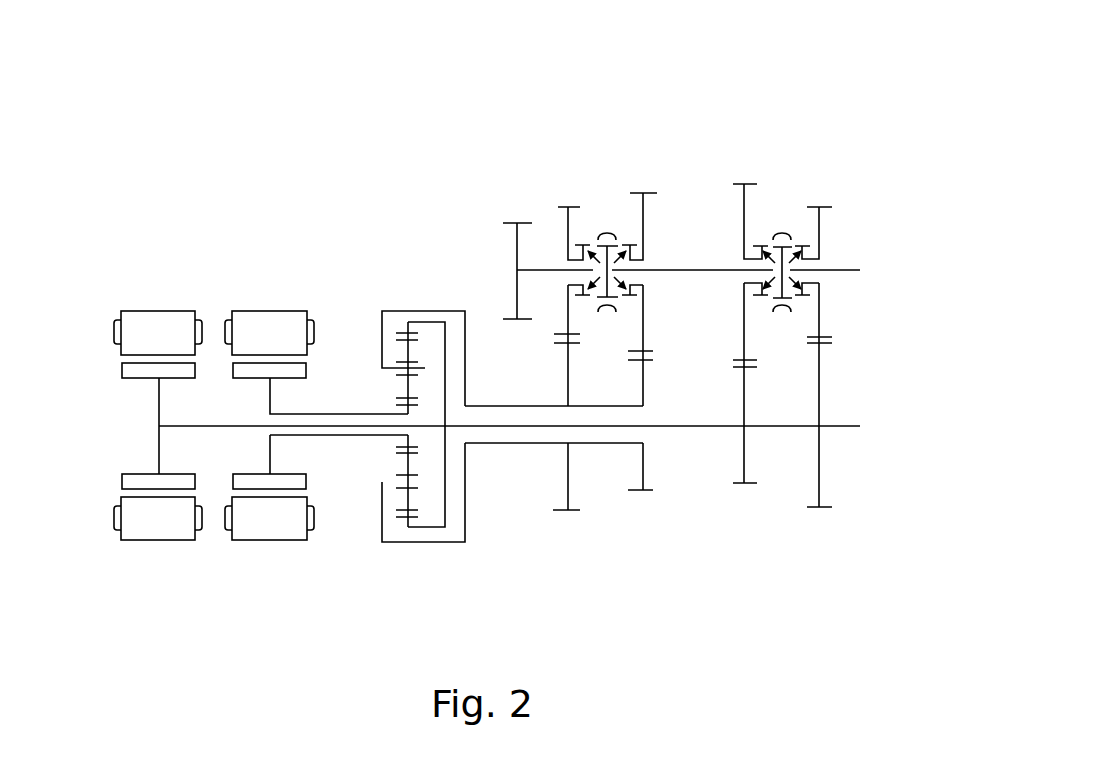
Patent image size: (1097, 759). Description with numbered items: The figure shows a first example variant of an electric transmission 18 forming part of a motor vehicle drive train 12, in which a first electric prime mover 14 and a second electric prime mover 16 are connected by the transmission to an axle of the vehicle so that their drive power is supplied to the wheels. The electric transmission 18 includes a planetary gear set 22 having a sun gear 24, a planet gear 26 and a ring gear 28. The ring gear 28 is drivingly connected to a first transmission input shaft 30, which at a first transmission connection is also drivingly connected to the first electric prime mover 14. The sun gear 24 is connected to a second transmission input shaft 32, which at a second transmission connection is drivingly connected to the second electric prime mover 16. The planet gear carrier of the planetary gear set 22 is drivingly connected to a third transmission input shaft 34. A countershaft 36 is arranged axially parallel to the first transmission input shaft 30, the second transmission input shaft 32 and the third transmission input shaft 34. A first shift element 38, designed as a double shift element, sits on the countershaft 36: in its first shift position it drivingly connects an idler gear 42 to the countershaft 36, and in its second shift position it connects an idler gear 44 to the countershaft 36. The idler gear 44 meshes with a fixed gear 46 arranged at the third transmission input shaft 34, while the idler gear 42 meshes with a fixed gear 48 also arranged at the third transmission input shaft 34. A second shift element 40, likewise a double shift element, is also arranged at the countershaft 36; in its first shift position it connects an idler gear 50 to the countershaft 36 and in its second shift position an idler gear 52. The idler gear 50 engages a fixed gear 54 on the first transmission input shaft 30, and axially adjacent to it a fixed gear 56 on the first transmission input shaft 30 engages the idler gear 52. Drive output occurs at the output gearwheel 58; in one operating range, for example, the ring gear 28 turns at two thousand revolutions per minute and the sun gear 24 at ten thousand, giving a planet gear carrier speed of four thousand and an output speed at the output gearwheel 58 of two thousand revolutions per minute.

The motor vehicle drive train 12 is at (213, 162).
The first electric prime mover 14 is at (153, 287).
The second electric prime mover 16 is at (273, 267).
The electric transmission 18 is at (387, 145).
The planetary gear set 22 is at (392, 272).
The sun gear 24 is at (408, 435).
The planet gear 26 is at (408, 352).
The ring gear 28 is at (403, 523).
The first transmission input shaft 30 is at (695, 427).
The second transmission input shaft 32 is at (323, 435).
The third transmission input shaft 34 is at (525, 445).
The countershaft 36 is at (835, 270).
The first shift element 38 is at (603, 235).
The second shift element 40 is at (777, 235).
The idler gear 42 is at (647, 238).
The idler gear 44 is at (563, 237).
The fixed gear 46 is at (570, 470).
The fixed gear 48 is at (645, 462).
The idler gear 50 is at (743, 233).
The idler gear 52 is at (822, 243).
The fixed gear 54 is at (747, 433).
The fixed gear 56 is at (822, 447).
The output gearwheel 58 is at (515, 258).